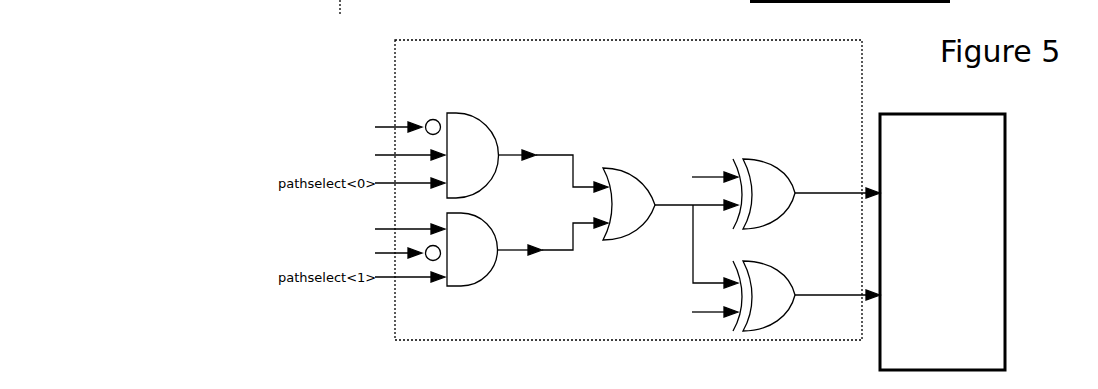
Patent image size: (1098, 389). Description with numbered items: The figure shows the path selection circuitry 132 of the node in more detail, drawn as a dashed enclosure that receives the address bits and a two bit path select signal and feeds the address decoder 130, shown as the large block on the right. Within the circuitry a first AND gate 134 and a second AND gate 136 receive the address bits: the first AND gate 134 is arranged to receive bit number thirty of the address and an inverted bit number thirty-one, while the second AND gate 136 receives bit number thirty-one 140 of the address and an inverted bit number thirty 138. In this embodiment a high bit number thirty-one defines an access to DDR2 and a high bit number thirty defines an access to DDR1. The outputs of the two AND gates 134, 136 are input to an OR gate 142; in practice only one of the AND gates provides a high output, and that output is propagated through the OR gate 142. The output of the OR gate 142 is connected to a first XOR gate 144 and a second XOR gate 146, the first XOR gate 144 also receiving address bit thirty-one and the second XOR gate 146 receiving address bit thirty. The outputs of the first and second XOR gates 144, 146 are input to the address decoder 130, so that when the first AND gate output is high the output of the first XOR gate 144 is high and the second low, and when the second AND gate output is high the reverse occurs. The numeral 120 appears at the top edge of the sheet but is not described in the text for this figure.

The address register 120 is at (375, 8).
The address decoder 130 is at (942, 242).
The path selection circuitry 132 is at (628, 177).
The first AND gate 134 is at (506, 124).
The second AND gate 136 is at (478, 265).
The inverted bit number 30 of the address 138 is at (351, 204).
The bit number 31 of the address 140 is at (351, 179).
The OR gate 142 is at (608, 238).
The first XOR gate 144 is at (770, 228).
The second XOR gate 146 is at (780, 268).